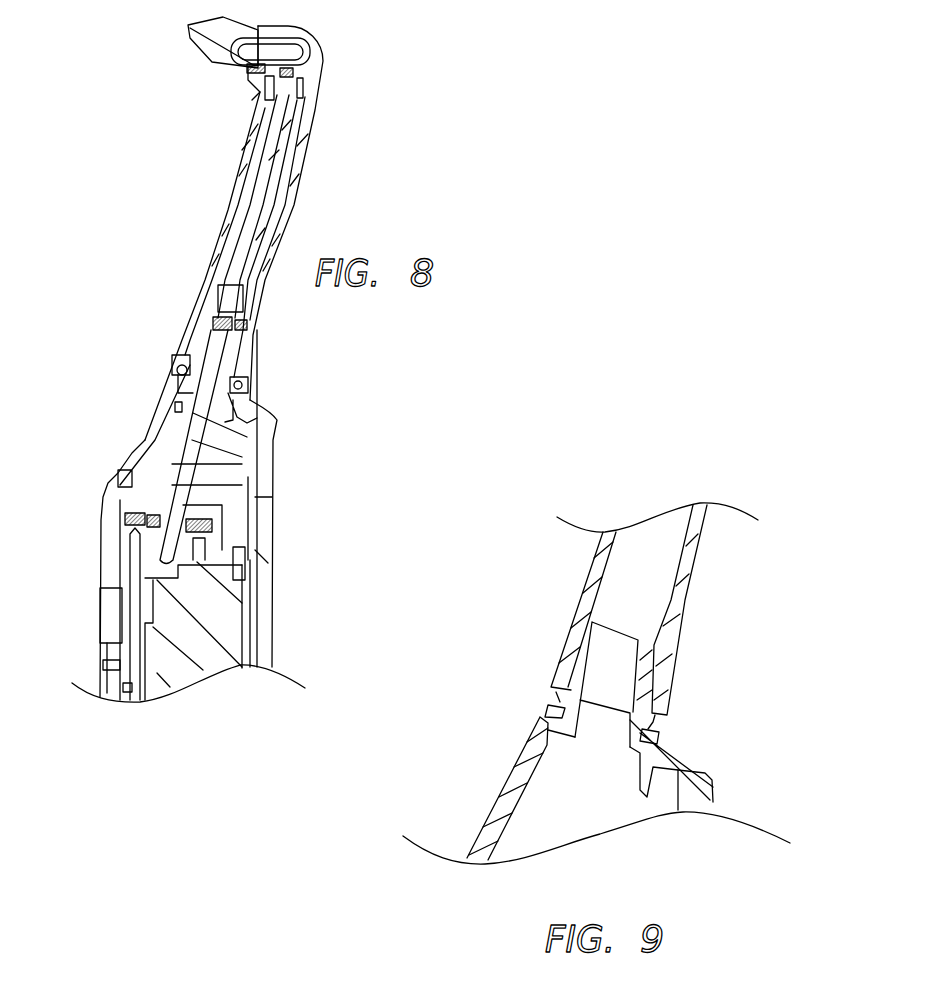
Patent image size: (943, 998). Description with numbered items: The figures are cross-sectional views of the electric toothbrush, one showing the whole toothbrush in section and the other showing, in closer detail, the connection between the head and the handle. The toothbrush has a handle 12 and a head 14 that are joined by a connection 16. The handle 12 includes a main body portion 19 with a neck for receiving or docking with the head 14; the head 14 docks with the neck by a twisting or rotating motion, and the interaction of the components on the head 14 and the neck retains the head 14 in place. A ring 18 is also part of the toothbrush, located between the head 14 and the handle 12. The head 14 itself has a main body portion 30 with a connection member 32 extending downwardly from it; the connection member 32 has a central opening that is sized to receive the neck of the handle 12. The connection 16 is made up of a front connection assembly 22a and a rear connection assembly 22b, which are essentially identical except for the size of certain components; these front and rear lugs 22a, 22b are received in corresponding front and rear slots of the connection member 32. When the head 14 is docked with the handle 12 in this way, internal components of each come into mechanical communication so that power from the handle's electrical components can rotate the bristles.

In FIG. 8, the handle 12 is at (110, 612).
In FIG. 9, the handle 12 is at (506, 799).
In FIG. 8, the head 14 is at (308, 87).
In FIG. 8, the connection 16 is at (390, 371).
In FIG. 9, the connection 16 is at (703, 689).
In FIG. 8, the ring 18 is at (250, 382).
In FIG. 8, the main body portion 19 is at (263, 483).
In FIG. 9, the main body portion 19 is at (712, 802).
In FIG. 9, the front connection assembly 22a is at (497, 708).
In FIG. 9, the rear connection assembly 22b is at (688, 735).
In FIG. 8, the main body portion 30 is at (295, 158).
In FIG. 9, the main body portion 30 is at (595, 584).
In FIG. 9, the connection member 32 is at (548, 710).